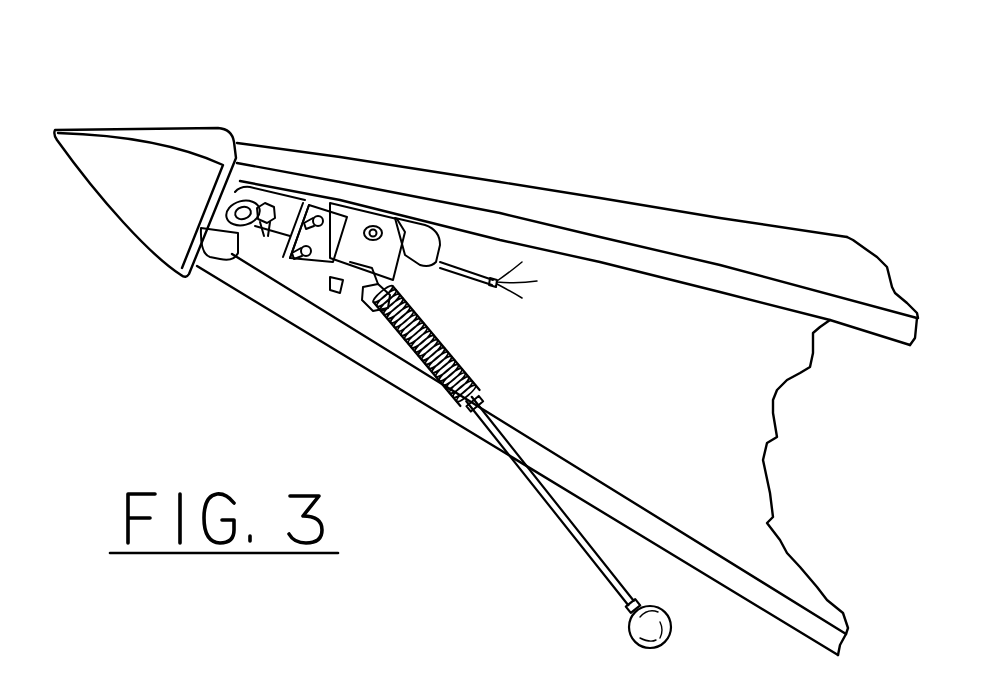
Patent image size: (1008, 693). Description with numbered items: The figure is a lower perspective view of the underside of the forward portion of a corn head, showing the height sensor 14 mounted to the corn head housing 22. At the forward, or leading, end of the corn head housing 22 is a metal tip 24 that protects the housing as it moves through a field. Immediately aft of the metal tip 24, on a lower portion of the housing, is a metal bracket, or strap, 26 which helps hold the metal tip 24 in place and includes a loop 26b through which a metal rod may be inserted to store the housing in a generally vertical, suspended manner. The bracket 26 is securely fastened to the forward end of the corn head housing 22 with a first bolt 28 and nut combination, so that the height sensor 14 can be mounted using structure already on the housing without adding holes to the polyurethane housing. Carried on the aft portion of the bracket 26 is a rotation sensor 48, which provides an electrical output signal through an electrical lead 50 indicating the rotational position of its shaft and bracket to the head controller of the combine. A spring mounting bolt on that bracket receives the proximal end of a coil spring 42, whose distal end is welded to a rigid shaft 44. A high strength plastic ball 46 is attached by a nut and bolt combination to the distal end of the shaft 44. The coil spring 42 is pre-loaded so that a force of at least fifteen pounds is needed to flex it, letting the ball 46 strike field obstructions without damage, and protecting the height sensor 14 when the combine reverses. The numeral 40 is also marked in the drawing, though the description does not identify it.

The height sensor 14 is at (274, 341).
The corn head housing 22 is at (642, 212).
The metal tip 24 is at (178, 137).
The bracket 26 is at (249, 192).
The loop 26b is at (200, 270).
The first bolt 28 is at (298, 195).
The pull rod 40 is at (483, 450).
The coil spring 42 is at (447, 348).
The rigid shaft 44 is at (523, 467).
The ball 46 is at (657, 645).
The rotation sensor 48 is at (413, 212).
The electrical lead 50 is at (482, 262).